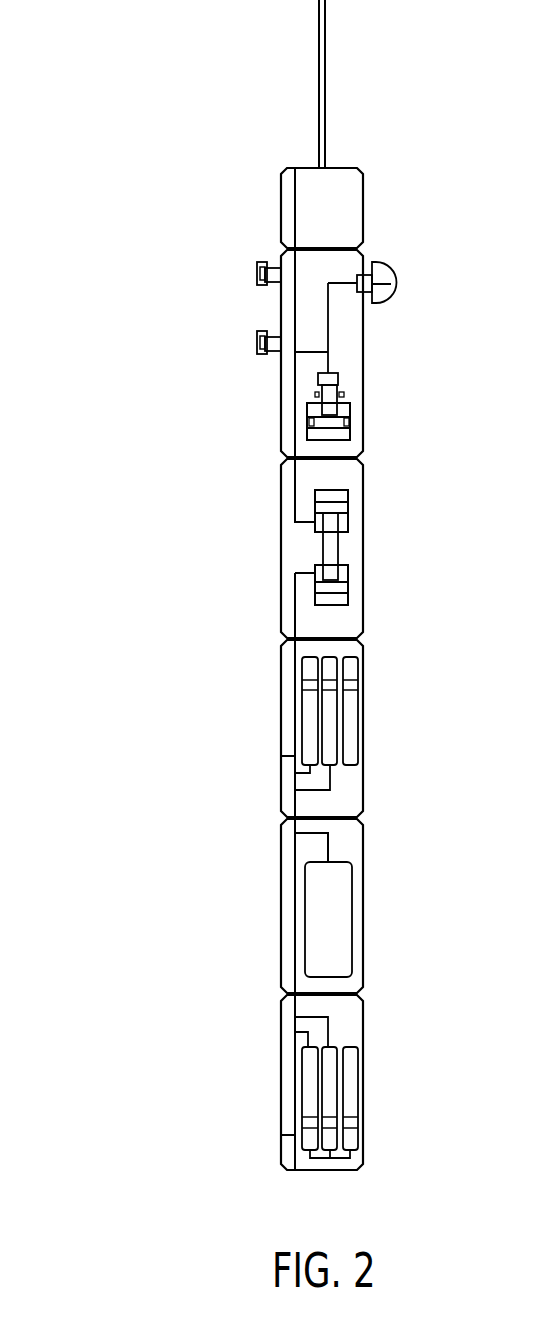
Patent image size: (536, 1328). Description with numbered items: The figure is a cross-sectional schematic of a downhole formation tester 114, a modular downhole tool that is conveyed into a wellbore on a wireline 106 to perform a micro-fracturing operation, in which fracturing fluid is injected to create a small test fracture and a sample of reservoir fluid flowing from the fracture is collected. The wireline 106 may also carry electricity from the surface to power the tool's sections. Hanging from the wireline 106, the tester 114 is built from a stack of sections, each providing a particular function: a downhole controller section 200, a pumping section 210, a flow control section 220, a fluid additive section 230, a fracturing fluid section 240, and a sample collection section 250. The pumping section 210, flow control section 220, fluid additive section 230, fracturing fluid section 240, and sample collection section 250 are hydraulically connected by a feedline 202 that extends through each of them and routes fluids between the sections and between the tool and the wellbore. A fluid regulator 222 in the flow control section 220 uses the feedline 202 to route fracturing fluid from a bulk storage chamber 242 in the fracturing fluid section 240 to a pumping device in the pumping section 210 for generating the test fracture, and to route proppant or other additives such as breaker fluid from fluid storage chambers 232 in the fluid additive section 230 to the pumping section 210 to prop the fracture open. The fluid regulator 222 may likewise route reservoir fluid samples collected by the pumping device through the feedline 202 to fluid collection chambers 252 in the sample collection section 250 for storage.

The wireline 106 is at (318, 47).
The downhole formation tester 114 is at (124, 180).
The downhole controller section 200 is at (281, 212).
The pumping section 210 is at (281, 318).
The feedline 202 is at (295, 393).
The flow control section 220 is at (281, 483).
The fluid regulator 222 is at (318, 548).
The fluid additive section 230 is at (281, 720).
The fluid storage chambers 232 is at (348, 733).
The fracturing fluid section 240 is at (281, 872).
The bulk storage chamber 242 is at (338, 940).
The sample collection section 250 is at (281, 1032).
The fluid collection chambers 252 is at (350, 1080).